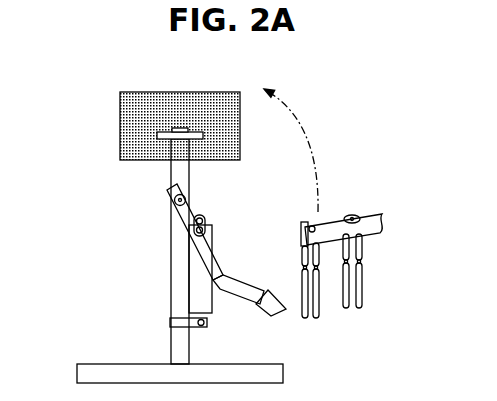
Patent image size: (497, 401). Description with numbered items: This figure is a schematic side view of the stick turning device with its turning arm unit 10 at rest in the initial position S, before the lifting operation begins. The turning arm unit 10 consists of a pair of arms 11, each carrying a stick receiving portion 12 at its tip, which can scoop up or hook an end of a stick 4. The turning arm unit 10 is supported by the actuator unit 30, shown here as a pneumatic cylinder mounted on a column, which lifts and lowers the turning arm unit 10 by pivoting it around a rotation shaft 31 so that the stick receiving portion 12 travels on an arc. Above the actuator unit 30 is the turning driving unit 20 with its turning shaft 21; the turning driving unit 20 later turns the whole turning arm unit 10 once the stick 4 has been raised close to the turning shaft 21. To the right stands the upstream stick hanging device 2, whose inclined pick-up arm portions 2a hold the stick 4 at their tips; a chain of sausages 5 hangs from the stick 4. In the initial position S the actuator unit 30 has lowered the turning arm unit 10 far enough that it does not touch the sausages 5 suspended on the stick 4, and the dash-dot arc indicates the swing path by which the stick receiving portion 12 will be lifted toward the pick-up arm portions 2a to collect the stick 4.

The stick hanging device 2 is at (354, 219).
The pick-up arm portions 2a is at (306, 227).
The stick 4 is at (352, 216).
The chain of sausages 5 is at (360, 288).
The turning arm unit 10 is at (199, 267).
The arm 11 is at (243, 297).
The stick receiving portion 12 is at (270, 292).
The turning driving unit 20 is at (108, 132).
The turning shaft 21 is at (178, 128).
The actuator unit 30 is at (190, 295).
The rotation shaft 31 is at (178, 202).
The initial position S is at (287, 332).